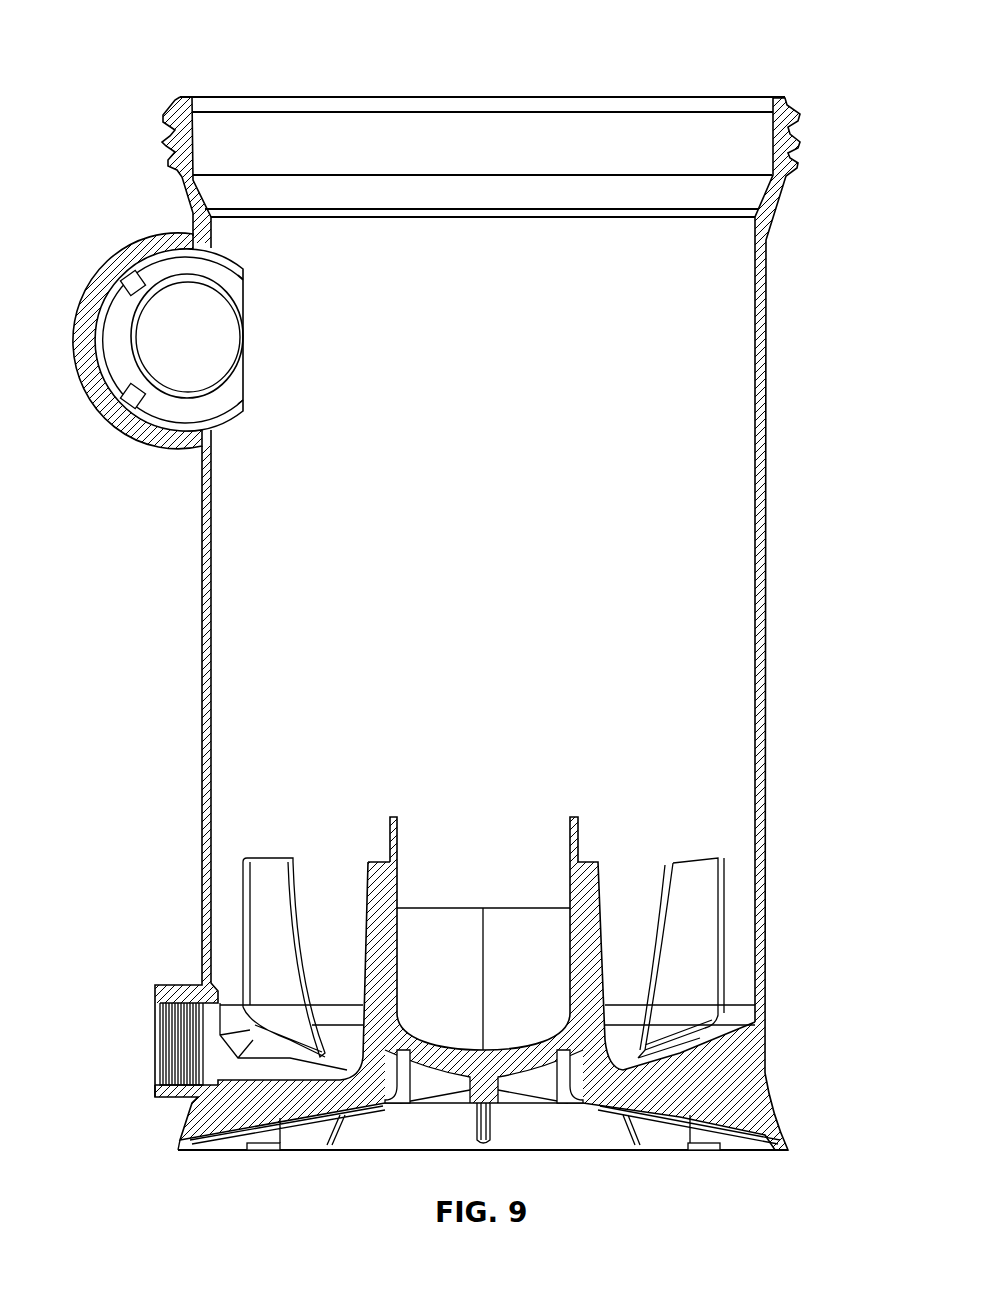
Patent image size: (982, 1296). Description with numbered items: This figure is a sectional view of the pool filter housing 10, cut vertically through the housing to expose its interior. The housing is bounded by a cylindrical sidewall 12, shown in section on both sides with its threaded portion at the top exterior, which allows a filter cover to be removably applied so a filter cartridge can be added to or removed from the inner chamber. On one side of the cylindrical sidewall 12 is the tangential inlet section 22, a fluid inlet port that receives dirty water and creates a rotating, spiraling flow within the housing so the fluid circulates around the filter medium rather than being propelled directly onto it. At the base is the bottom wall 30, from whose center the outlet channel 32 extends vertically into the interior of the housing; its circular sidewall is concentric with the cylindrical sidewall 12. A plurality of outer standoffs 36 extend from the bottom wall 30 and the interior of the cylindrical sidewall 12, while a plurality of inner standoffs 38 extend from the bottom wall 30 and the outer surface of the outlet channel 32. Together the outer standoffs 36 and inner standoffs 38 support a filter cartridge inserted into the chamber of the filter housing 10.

The pool filter housing 10 is at (135, 45).
The cylindrical sidewall 12 is at (765, 549).
The tangential inlet section 22 is at (123, 244).
The bottom wall 30 is at (633, 1048).
The outlet channel 32 is at (496, 876).
The outer standoffs 36 is at (267, 915).
The inner standoffs 38 is at (365, 875).